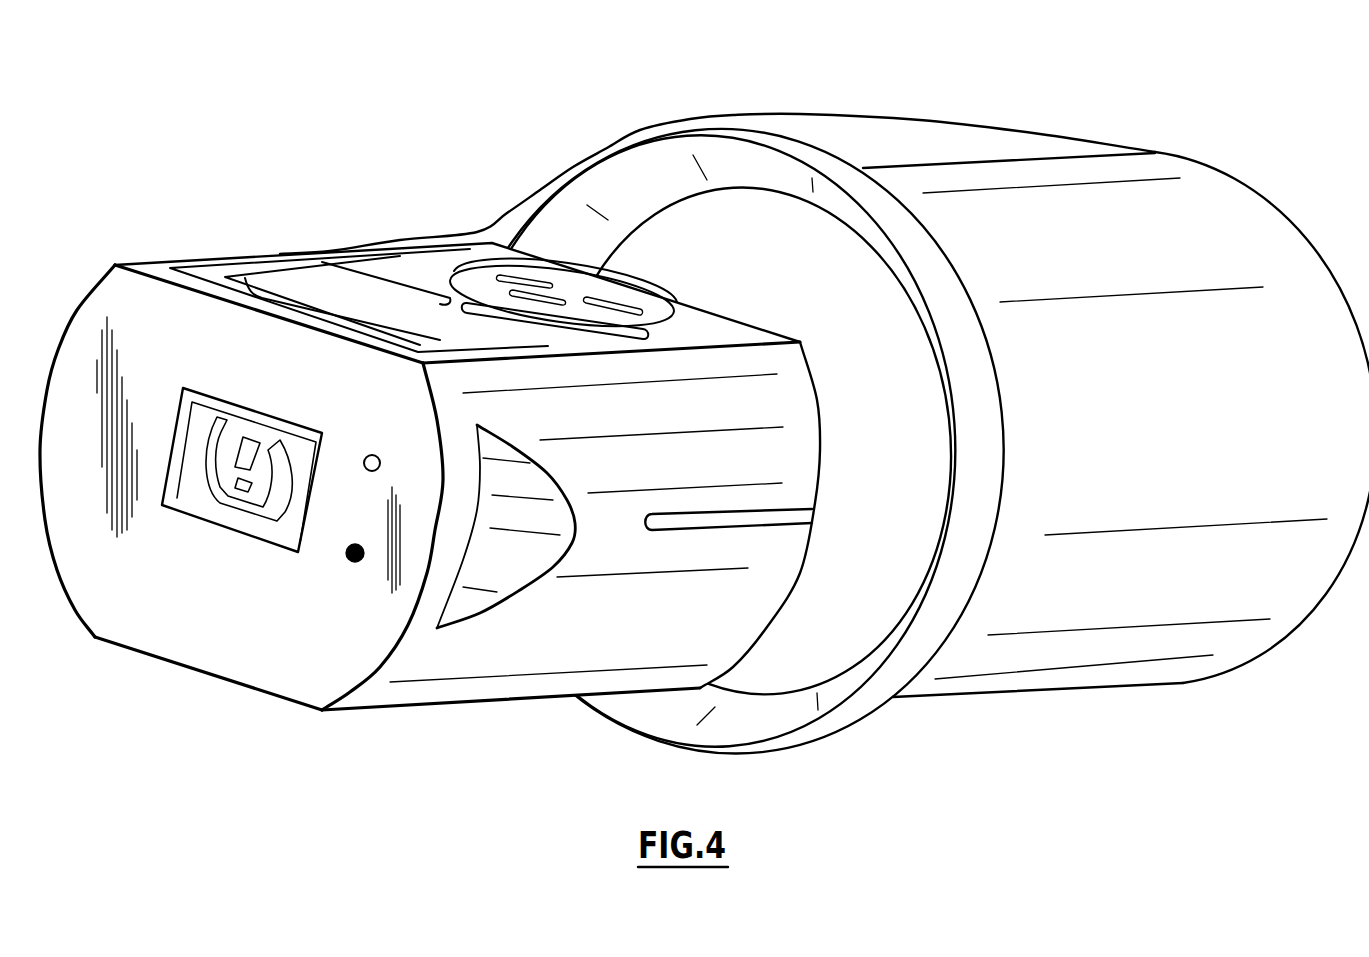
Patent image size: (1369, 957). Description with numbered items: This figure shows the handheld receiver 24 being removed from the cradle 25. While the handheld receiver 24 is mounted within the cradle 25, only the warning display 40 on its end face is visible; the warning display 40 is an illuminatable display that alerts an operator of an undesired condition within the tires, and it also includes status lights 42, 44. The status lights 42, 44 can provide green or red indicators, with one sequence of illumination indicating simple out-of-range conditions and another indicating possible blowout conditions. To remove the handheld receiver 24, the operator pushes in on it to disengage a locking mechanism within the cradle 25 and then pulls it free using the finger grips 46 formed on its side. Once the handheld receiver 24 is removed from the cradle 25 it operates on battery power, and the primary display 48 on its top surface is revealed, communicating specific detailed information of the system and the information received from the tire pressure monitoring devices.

The handheld receiver 24 is at (288, 650).
The cradle 25 is at (1090, 150).
The warning display 40 is at (208, 530).
The status light 42 is at (357, 562).
The status light 44 is at (372, 455).
The finger grips 46 is at (502, 565).
The primary display 48 is at (310, 282).